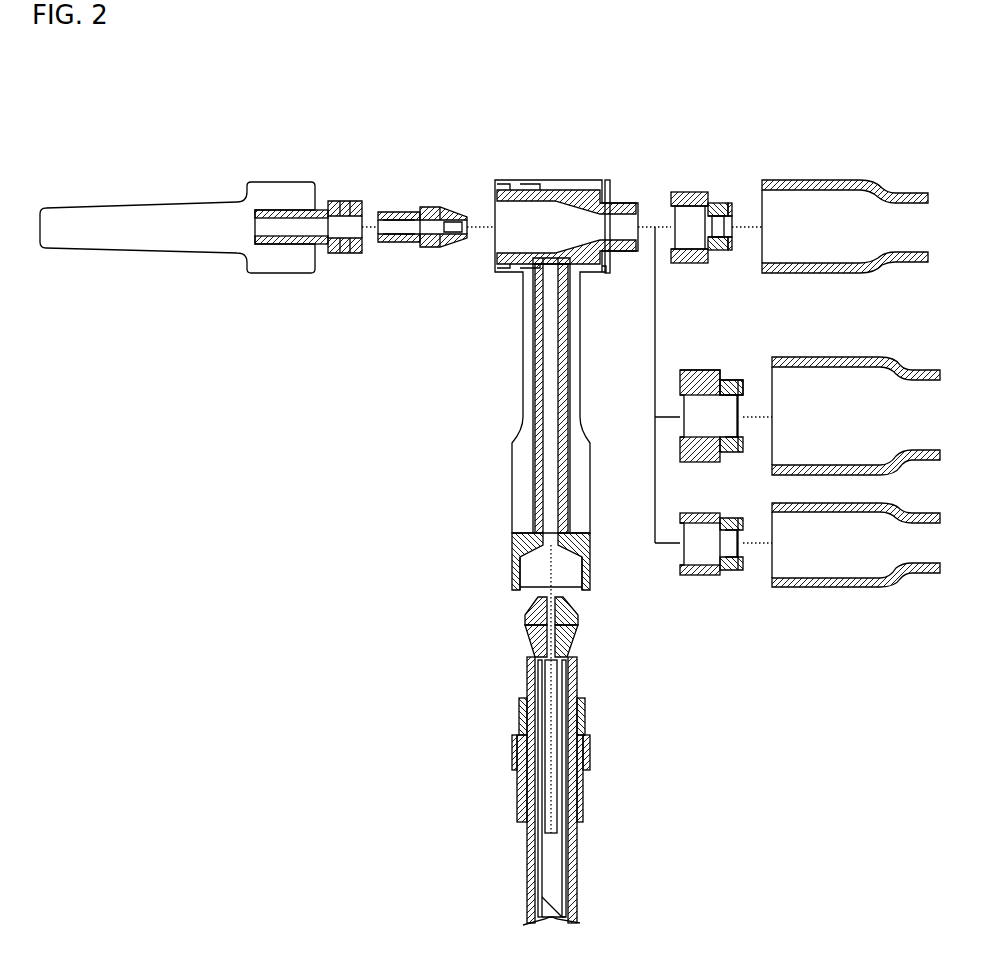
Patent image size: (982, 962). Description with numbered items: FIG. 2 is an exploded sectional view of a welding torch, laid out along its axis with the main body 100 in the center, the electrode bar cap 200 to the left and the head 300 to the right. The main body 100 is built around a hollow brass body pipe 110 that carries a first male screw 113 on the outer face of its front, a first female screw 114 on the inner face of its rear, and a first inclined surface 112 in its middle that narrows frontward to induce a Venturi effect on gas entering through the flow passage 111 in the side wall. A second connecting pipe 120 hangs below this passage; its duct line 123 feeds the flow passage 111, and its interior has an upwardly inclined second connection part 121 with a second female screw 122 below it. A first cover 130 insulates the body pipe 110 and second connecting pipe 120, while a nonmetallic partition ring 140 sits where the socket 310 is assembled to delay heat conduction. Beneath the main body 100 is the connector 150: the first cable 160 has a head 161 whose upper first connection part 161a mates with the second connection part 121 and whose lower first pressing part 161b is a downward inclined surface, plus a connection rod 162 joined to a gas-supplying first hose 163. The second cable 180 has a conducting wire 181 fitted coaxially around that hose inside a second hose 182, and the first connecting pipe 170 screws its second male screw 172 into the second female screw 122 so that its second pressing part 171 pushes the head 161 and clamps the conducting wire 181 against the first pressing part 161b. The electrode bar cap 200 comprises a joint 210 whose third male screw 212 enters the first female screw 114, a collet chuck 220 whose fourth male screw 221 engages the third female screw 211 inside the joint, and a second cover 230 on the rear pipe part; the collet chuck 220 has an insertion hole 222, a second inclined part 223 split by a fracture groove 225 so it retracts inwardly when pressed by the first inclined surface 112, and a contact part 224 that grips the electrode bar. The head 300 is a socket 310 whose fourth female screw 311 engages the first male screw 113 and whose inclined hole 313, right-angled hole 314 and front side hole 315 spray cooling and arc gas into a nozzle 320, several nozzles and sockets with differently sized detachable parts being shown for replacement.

The main body 100 is at (562, 168).
The body pipe 110 is at (593, 265).
The flow passage 111 is at (540, 248).
The first inclined surface 112 is at (606, 272).
The first male screw 113 is at (624, 208).
The first female screw 114 is at (520, 208).
The second connecting pipe 120 is at (513, 580).
The second connection part 121 is at (520, 560).
The second female screw 122 is at (582, 580).
The duct line 123 is at (570, 497).
The first cover 130 is at (590, 433).
The partition ring 140 is at (609, 198).
The connector 150 is at (625, 768).
The first cable 160 is at (700, 665).
The head 161 is at (668, 635).
The first connection part 161a is at (575, 612).
The first pressing part 161b is at (568, 645).
The connection rod 162 is at (562, 718).
The first hose 163 is at (558, 680).
The first connecting pipe 170 is at (585, 800).
The second pressing part 171 is at (522, 700).
The second male screw 172 is at (517, 725).
The second cable 180 is at (468, 897).
The conducting wire 181 is at (540, 900).
The second hose 182 is at (530, 870).
The electrode bar cap 200 is at (268, 150).
The joint 210 is at (298, 192).
The third female screw 211 is at (345, 246).
The third male screw 212 is at (338, 200).
The collet chuck 220 is at (428, 215).
The fourth male screw 221 is at (394, 222).
The insertion hole 222 is at (393, 242).
The second inclined part 223 is at (450, 210).
The contact part 224 is at (455, 232).
The fracture groove 225 is at (427, 245).
The second cover 230 is at (183, 218).
The head 300 is at (748, 135).
The socket 310 is at (703, 192).
The fourth female screw 311 is at (684, 250).
The inclined hole 313 is at (724, 248).
The right-angled hole 314 is at (716, 252).
The side hole 315 is at (735, 240).
The nozzle 320 is at (832, 190).